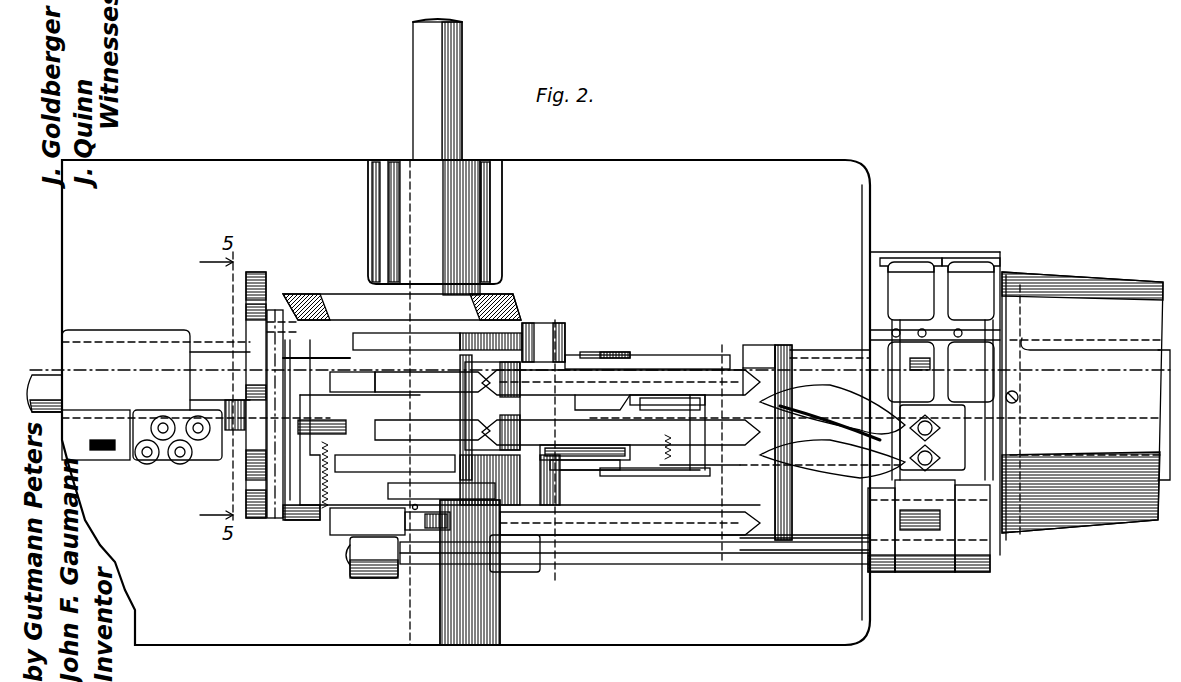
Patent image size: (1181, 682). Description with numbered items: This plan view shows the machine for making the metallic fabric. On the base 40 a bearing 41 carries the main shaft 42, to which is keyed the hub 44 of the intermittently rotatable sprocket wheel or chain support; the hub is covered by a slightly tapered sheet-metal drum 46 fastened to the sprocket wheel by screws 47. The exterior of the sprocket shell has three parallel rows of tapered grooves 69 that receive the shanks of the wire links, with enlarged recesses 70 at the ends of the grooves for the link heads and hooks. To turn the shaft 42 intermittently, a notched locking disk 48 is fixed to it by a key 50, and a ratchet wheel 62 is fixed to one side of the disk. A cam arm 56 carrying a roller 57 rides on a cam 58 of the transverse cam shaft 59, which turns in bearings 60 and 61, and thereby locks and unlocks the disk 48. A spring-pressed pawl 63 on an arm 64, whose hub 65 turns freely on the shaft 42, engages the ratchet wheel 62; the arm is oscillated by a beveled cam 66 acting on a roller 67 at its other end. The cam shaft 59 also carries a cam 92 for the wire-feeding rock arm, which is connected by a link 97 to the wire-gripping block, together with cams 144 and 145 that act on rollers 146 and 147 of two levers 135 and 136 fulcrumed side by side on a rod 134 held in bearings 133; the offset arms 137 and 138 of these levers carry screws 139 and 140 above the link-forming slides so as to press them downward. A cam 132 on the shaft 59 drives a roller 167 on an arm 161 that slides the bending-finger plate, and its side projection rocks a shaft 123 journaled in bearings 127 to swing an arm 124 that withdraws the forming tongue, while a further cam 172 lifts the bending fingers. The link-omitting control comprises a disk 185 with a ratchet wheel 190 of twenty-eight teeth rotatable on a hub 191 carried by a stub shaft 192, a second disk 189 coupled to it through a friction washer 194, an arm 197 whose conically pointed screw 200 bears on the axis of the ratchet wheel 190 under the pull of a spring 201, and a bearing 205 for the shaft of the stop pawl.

The base 40 is at (466, 402).
The bearing 41 is at (126, 395).
The main shaft 42 is at (1105, 385).
The hub 44 is at (1080, 350).
The sheet-metal drum 46 is at (1100, 275).
The screws 47 is at (1018, 397).
The notched locking disk 48 is at (262, 379).
The key 50 is at (220, 391).
The cam arm 56 is at (520, 325).
The roller 57 is at (565, 330).
The cam 58 is at (353, 341).
The cam shaft 59 is at (462, 97).
The bearing 60 is at (478, 218).
The bearing 61 is at (470, 612).
The ratchet wheel 62 is at (272, 518).
The spring-pressed pawl 63 is at (268, 440).
The arm 64 is at (305, 520).
The hub 65 is at (316, 396).
The cam 66 is at (521, 300).
The roller 67 is at (418, 285).
The tapered grooves 69 is at (940, 369).
The enlarged recesses 70 is at (900, 332).
The cam 92 is at (388, 490).
The link 97 is at (655, 484).
The shaft 123 is at (700, 565).
The arm 124 is at (925, 572).
The bearings 127 is at (890, 572).
The cam 132 is at (345, 530).
The bearings 133 is at (790, 345).
The shaft or rod 134 is at (762, 345).
The lever 135 is at (672, 380).
The lever 136 is at (700, 395).
The offset arm 137 is at (815, 420).
The offset arm 138 is at (832, 451).
The screw 139 is at (950, 410).
The screw 140 is at (940, 458).
The cam 144 is at (352, 379).
The cam 145 is at (383, 420).
The roller 146 is at (432, 380).
The roller 147 is at (432, 428).
The arm 161 is at (620, 525).
The roller 167 is at (406, 521).
The operating cam 172 is at (395, 463).
The disk 185 is at (573, 460).
The disk 189 is at (510, 430).
The ratchet wheel 190 is at (560, 460).
The hub 191 is at (602, 409).
The stub shaft 192 is at (605, 352).
The friction disk 194 is at (612, 505).
The arm 197 is at (670, 465).
The conically-pointed screw 200 is at (595, 462).
The coiled contractile spring 201 is at (689, 449).
The bearing 205 is at (670, 405).